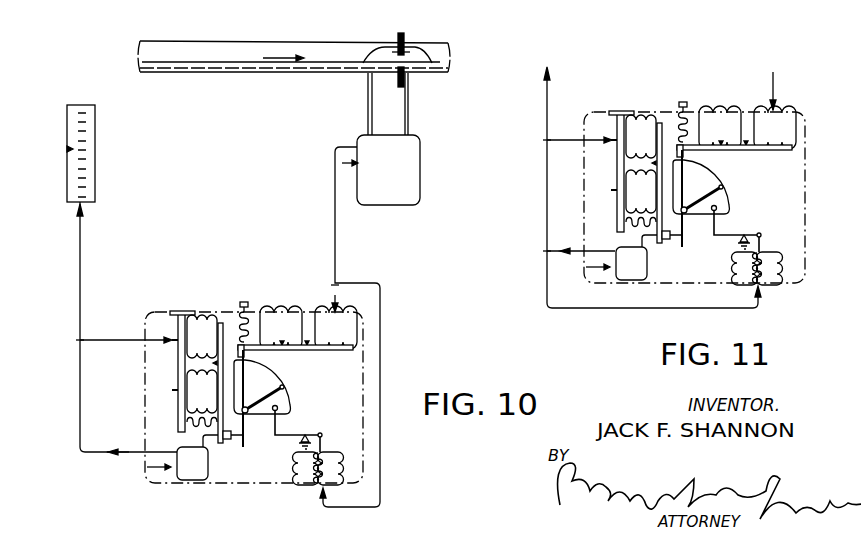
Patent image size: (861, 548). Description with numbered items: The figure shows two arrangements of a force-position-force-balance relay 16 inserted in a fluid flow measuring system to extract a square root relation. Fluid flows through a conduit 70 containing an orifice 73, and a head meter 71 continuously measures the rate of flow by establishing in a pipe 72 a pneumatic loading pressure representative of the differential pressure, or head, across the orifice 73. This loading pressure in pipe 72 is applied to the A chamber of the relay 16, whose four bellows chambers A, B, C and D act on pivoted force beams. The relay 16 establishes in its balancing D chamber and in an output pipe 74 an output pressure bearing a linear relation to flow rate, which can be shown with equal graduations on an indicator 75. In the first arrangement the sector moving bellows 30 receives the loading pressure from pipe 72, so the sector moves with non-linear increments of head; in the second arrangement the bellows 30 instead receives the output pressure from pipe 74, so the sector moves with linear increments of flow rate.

In FIG. 10, the force-position-force-balance relay 16 is at (205, 310).
In FIG. 11, the force-position-force-balance relay 16 is at (694, 182).
In FIG. 10, the sector moving bellows 30 is at (298, 464).
In FIG. 11, the sector moving bellows 30 is at (741, 268).
In FIG. 10, the conduit 70 is at (212, 73).
In FIG. 10, the head meter 71 is at (398, 182).
In FIG. 10, the pipe 72 is at (335, 212).
In FIG. 11, the pipe 72 is at (773, 72).
In FIG. 10, the orifice 73 is at (395, 42).
In FIG. 10, the output pipe 74 is at (81, 262).
In FIG. 11, the output pipe 74 is at (546, 185).
In FIG. 10, the indicator 75 is at (96, 143).